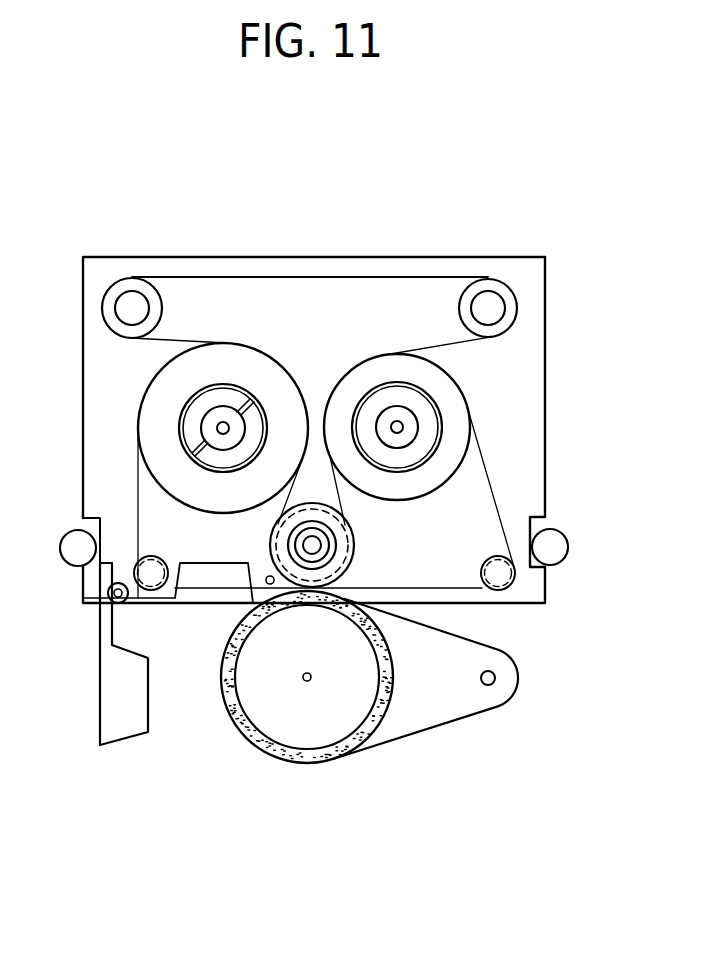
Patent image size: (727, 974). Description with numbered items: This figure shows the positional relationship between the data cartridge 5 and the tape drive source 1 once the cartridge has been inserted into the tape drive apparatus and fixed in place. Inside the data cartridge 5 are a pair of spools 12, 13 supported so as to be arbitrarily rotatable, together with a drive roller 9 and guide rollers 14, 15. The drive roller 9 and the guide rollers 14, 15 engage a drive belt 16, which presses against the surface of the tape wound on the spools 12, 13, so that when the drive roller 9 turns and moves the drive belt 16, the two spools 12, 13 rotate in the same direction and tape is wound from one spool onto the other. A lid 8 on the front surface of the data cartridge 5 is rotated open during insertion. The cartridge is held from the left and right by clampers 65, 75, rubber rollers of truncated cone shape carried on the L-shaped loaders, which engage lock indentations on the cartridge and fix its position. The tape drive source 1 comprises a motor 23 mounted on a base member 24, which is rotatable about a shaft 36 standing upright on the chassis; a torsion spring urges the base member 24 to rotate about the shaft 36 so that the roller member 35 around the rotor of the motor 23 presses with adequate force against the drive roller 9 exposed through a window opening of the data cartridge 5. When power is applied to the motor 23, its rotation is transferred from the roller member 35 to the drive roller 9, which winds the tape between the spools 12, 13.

The tape drive source 1 is at (281, 717).
The data cartridge 5 is at (475, 256).
The lid 8 is at (114, 685).
The drive roller 9 is at (364, 548).
The spool 12 is at (195, 412).
The spool 13 is at (425, 420).
The guide roller 14 is at (142, 308).
The guide roller 15 is at (483, 308).
The drive belt 16 is at (328, 278).
The motor 23 is at (343, 723).
The base member 24 is at (437, 707).
The roller member 35 is at (297, 766).
The shaft 36 is at (496, 679).
The clamper 65 is at (569, 553).
The clamper 75 is at (66, 561).